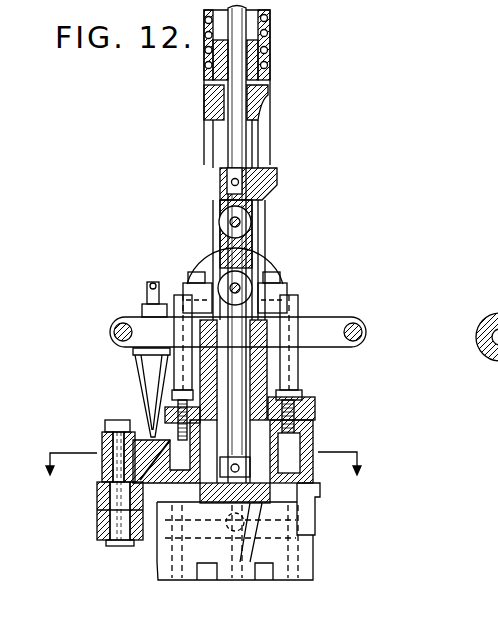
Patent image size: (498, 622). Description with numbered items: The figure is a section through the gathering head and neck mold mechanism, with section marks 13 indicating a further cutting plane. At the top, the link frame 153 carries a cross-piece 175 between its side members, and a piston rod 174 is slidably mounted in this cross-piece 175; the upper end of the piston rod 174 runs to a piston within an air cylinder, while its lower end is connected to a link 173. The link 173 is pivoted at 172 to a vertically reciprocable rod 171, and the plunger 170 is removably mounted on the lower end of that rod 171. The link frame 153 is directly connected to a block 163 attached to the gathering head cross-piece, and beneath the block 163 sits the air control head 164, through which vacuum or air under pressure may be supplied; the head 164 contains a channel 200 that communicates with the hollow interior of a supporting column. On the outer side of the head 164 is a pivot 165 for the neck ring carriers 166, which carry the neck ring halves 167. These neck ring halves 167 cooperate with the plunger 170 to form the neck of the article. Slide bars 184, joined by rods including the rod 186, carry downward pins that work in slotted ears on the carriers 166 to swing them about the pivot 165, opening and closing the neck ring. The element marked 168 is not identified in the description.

The link frame 153 is at (262, 143).
The cross-piece 175 is at (263, 104).
The piston rod 174 is at (237, 133).
The link 173 is at (239, 240).
The pivot 172 is at (230, 283).
The block 163 is at (292, 296).
The slide bars 184 is at (322, 327).
The rod 186 is at (367, 328).
The vertically reciprocable rod 171 is at (238, 392).
The air control head 164 is at (317, 428).
The channel 200 is at (293, 462).
The section line 13- 13 is at (199, 451).
The pivot 165 is at (118, 541).
The neck ring carriers 166 is at (98, 494).
The bracket 168 is at (300, 500).
The neck ring halves 167 is at (314, 577).
The plunger 170 is at (236, 565).